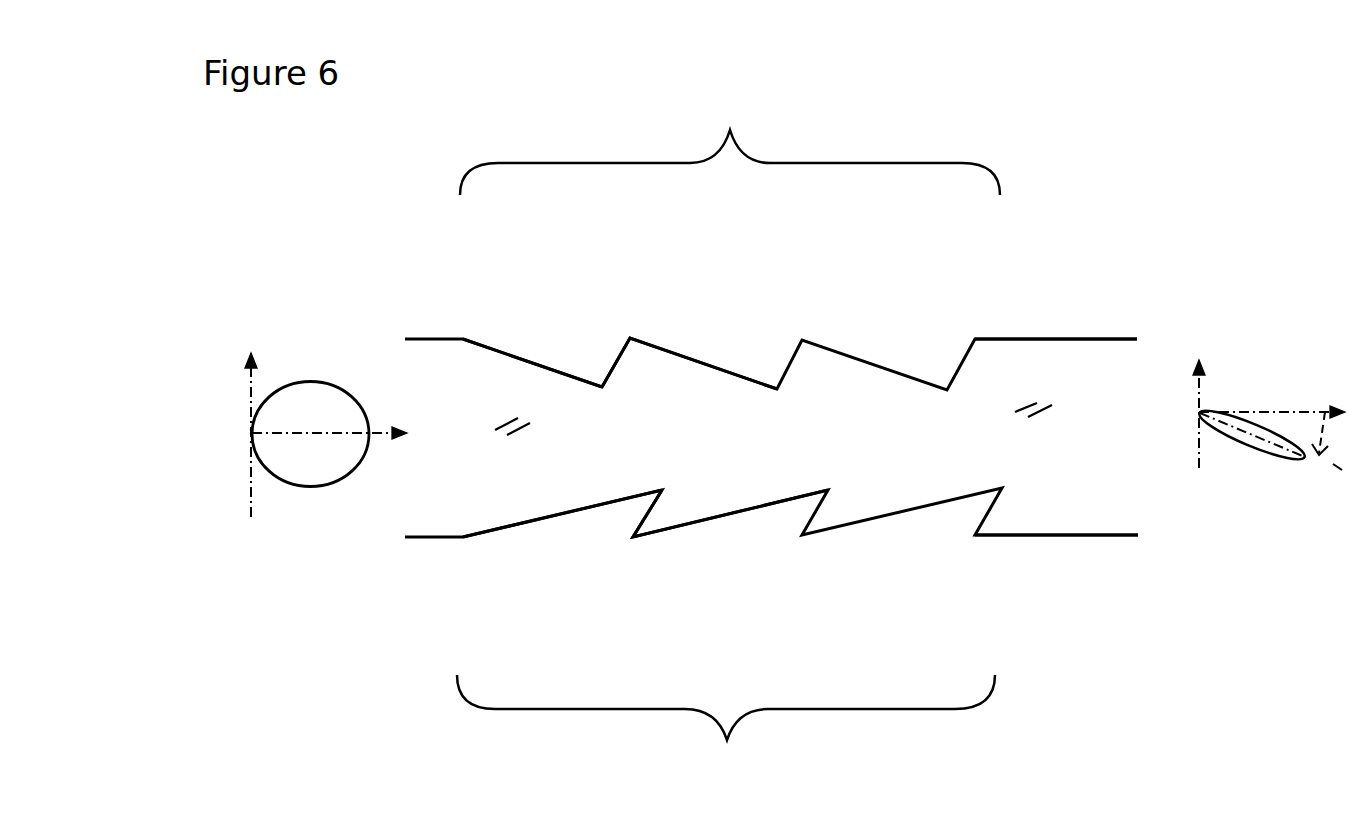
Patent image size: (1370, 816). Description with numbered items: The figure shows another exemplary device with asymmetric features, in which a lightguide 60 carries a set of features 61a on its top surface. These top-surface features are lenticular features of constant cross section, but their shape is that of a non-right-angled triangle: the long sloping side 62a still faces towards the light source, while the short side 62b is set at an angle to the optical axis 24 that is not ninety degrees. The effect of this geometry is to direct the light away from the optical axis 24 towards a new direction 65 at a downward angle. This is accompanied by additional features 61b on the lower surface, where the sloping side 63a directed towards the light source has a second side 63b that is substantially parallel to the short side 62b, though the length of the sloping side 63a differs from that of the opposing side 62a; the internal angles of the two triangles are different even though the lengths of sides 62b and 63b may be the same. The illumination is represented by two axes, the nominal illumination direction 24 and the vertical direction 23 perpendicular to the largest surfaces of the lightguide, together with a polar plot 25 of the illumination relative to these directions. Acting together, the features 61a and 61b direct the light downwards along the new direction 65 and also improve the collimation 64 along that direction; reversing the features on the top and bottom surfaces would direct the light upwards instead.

The vertical direction 23 is at (691, 430).
The nominal illumination direction 24 is at (802, 428).
The polar plot 25 is at (310, 513).
The lightguide 60 is at (816, 385).
The features 61a is at (771, 240).
The additional features 61b is at (771, 634).
The long sloping side 62a is at (532, 292).
The short side 62b is at (689, 320).
The sloping side 63a is at (562, 571).
The second side 63b is at (730, 556).
The collimation 64 is at (1252, 516).
The new direction 65 is at (1309, 526).